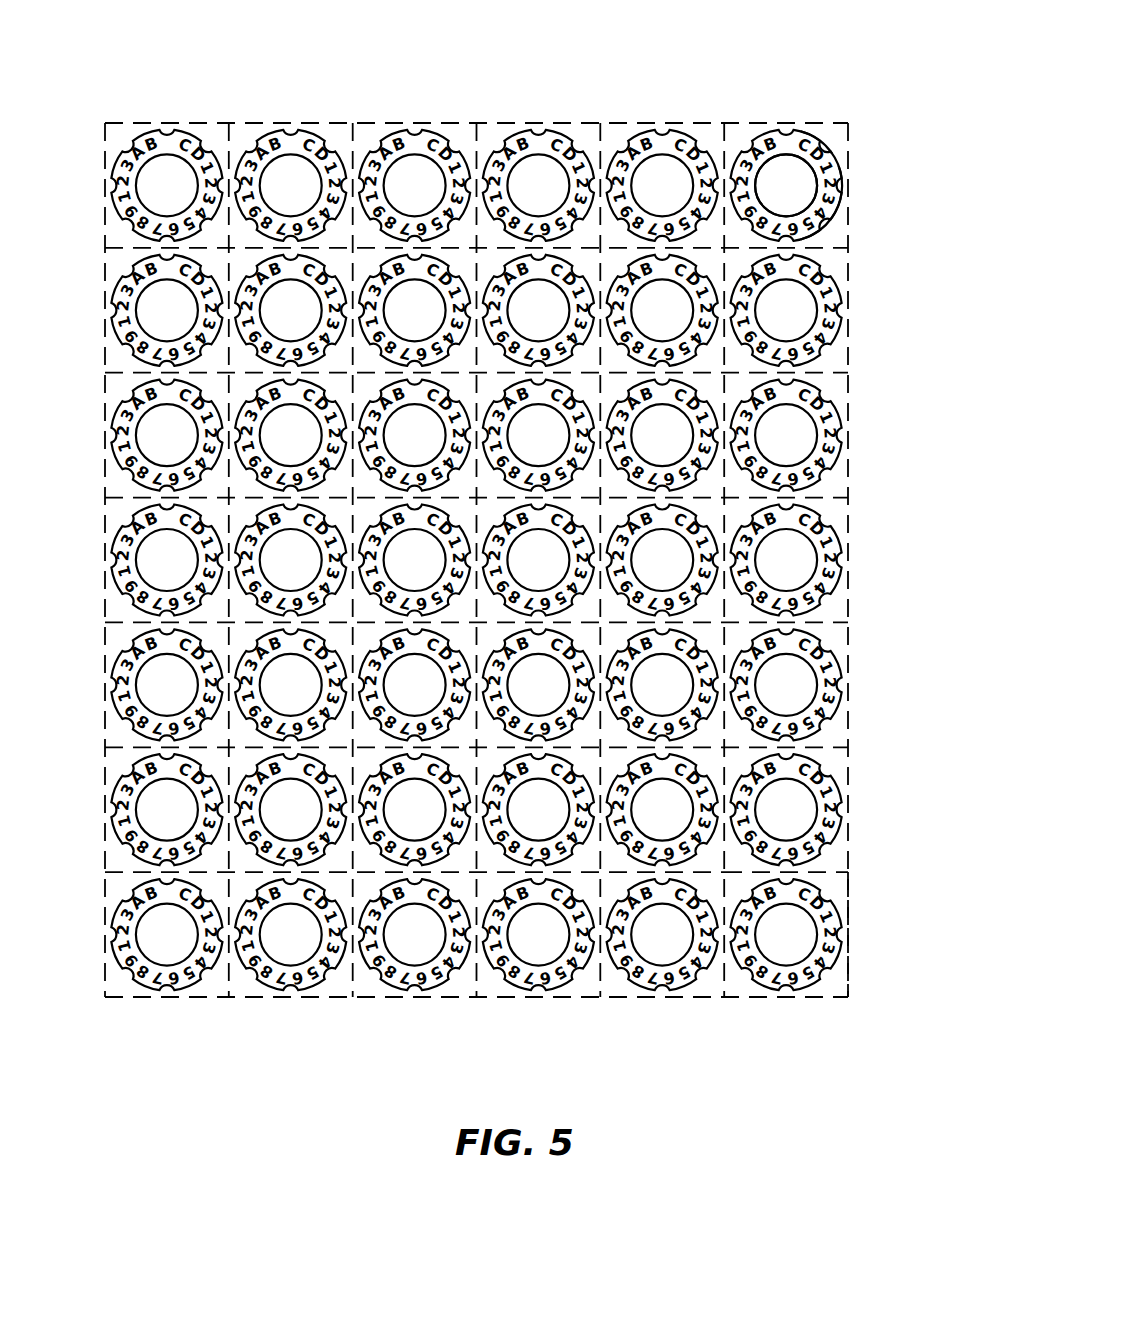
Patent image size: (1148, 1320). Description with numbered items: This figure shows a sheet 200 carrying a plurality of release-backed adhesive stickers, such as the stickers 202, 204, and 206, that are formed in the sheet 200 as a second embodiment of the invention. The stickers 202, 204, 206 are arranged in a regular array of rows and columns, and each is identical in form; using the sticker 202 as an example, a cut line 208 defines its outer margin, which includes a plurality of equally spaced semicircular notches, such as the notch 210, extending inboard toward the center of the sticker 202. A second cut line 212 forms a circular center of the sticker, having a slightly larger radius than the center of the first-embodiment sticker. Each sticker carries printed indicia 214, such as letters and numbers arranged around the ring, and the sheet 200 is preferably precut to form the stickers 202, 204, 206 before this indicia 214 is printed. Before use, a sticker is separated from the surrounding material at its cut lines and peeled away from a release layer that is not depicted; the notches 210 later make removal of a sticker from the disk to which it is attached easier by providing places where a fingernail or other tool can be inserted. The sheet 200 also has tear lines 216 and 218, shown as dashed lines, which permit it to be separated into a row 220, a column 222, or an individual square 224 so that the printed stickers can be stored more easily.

The sheet 200 is at (771, 61).
The sticker 202 is at (838, 173).
The sticker 204 is at (418, 137).
The sticker 206 is at (821, 513).
The cut line 208 is at (843, 213).
The notch 210 is at (828, 150).
The second cut line 212 is at (786, 152).
The indicia 214 is at (800, 231).
The tear line 216 is at (823, 374).
The tear line 218 is at (723, 985).
The row 220 is at (856, 297).
The column 222 is at (653, 1007).
The square 224 is at (838, 893).